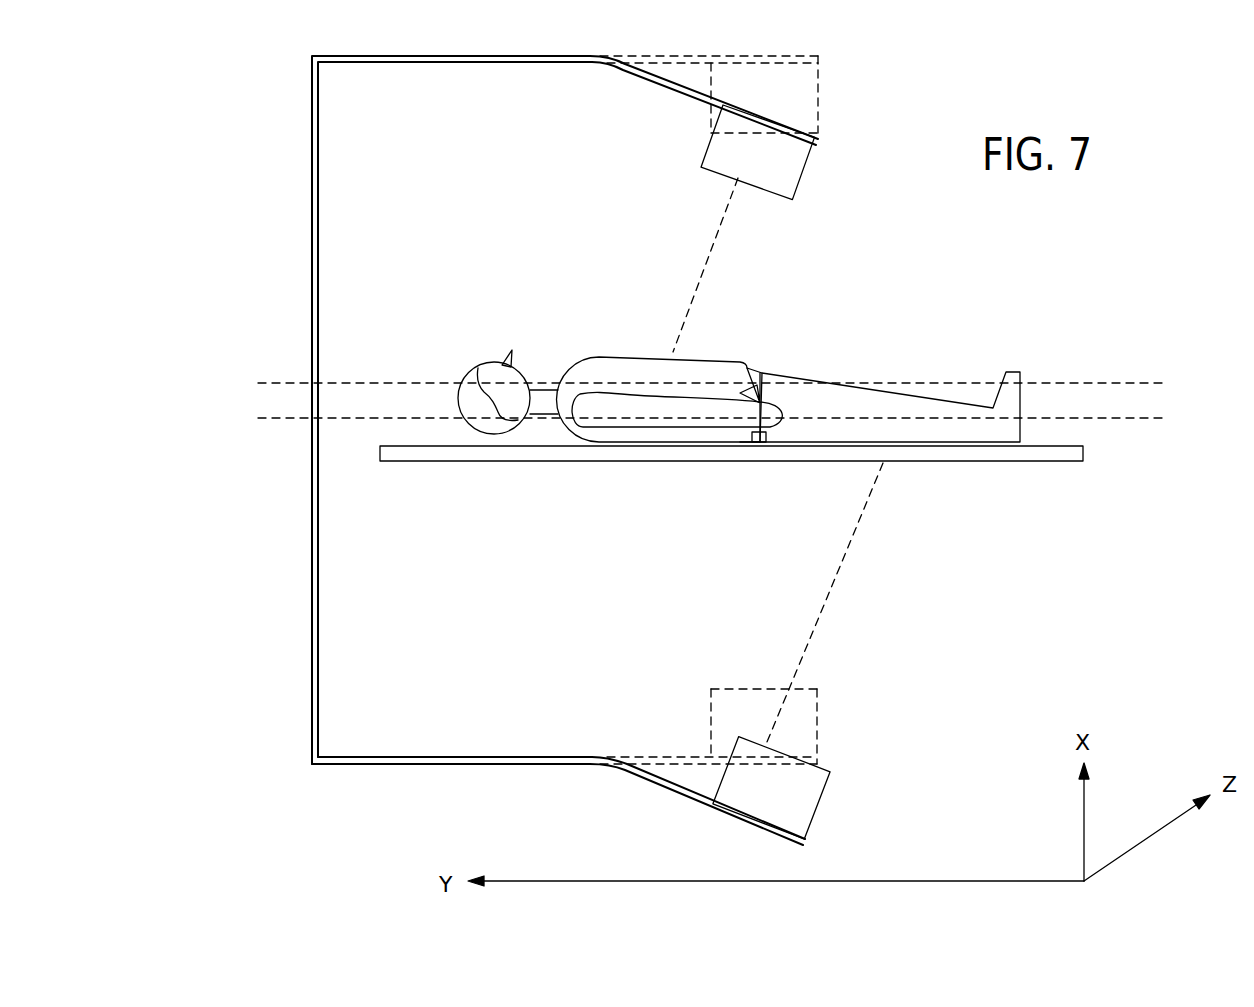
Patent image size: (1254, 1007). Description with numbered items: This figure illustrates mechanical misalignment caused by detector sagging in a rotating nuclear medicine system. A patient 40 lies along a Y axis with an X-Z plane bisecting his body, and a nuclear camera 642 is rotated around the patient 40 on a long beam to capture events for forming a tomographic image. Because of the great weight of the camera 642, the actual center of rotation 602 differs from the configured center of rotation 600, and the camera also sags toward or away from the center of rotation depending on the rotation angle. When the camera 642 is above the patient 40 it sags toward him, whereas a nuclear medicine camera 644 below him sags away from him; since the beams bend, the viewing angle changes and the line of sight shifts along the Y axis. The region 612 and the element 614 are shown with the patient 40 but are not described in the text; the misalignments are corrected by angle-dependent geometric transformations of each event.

The patient 40 is at (827, 402).
The configured center of rotation 600 is at (1110, 424).
The actual center of rotation 602 is at (1090, 385).
The patient torso / organ region of interest 612 is at (670, 357).
The patient table 614 is at (883, 463).
The nuclear camera 642 is at (760, 132).
The nuclear medicine camera 644 is at (810, 790).